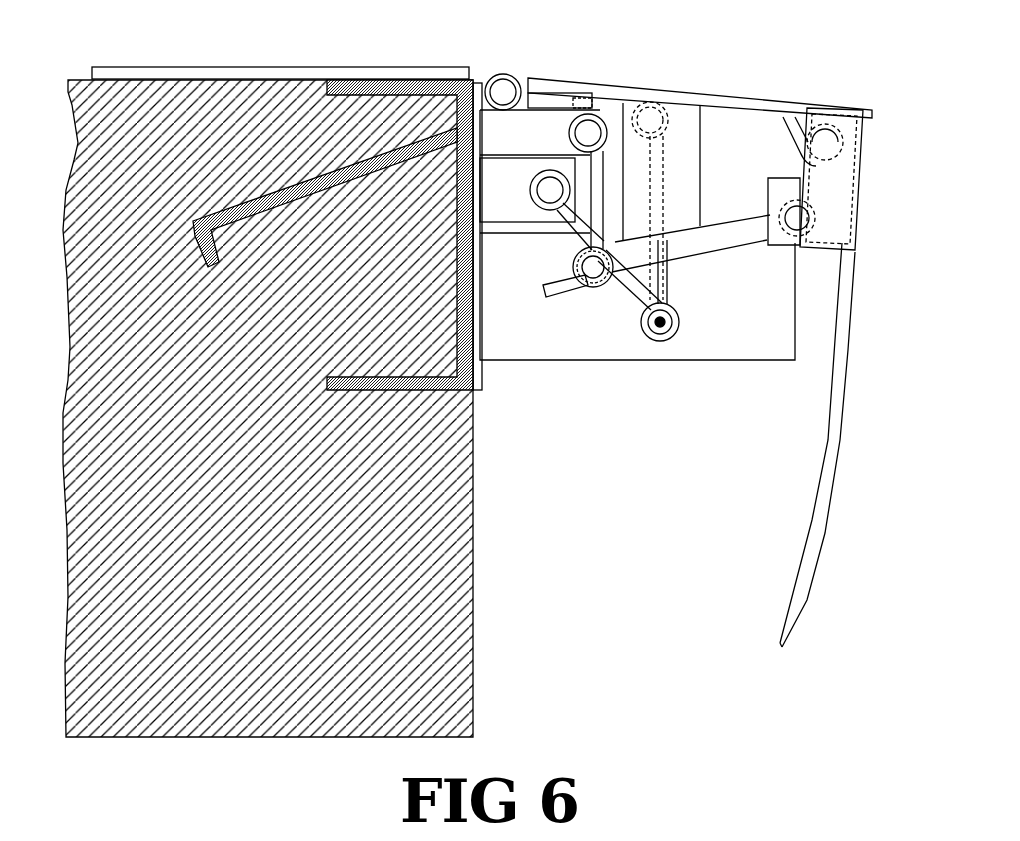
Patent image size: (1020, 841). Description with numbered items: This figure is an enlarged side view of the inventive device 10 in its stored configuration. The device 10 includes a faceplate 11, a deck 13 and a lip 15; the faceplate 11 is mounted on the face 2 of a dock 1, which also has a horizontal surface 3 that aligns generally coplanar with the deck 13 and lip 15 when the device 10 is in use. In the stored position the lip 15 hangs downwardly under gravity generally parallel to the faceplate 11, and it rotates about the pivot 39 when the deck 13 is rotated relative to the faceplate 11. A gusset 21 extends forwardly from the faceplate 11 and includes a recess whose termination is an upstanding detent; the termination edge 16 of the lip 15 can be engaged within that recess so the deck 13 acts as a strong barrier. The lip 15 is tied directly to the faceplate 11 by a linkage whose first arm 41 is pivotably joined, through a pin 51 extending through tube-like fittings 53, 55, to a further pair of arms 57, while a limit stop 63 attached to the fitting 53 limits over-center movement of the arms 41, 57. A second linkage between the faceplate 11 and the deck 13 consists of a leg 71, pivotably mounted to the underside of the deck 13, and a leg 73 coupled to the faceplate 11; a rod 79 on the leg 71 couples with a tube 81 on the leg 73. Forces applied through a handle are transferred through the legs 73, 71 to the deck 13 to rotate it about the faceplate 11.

The dock 1 is at (488, 503).
The face of the dock 2 is at (473, 440).
The horizontal surface of the dock 3 is at (77, 82).
The inventive device 10 is at (660, 545).
The faceplate 11 is at (482, 372).
The deck 13 is at (718, 92).
The lip 15 is at (845, 392).
The termination edge 16 is at (781, 650).
The gusset 21 is at (600, 340).
The pivot 39 is at (825, 142).
The first arm 41 is at (725, 240).
The pin 51 is at (593, 267).
The fitting 53 is at (650, 339).
The fitting 55 is at (650, 339).
The further pair of arms 57 is at (608, 185).
The limit stop 63 is at (552, 297).
The leg 71 is at (668, 282).
The leg 73 is at (630, 297).
The rod 79 is at (714, 350).
The tube 81 is at (670, 333).